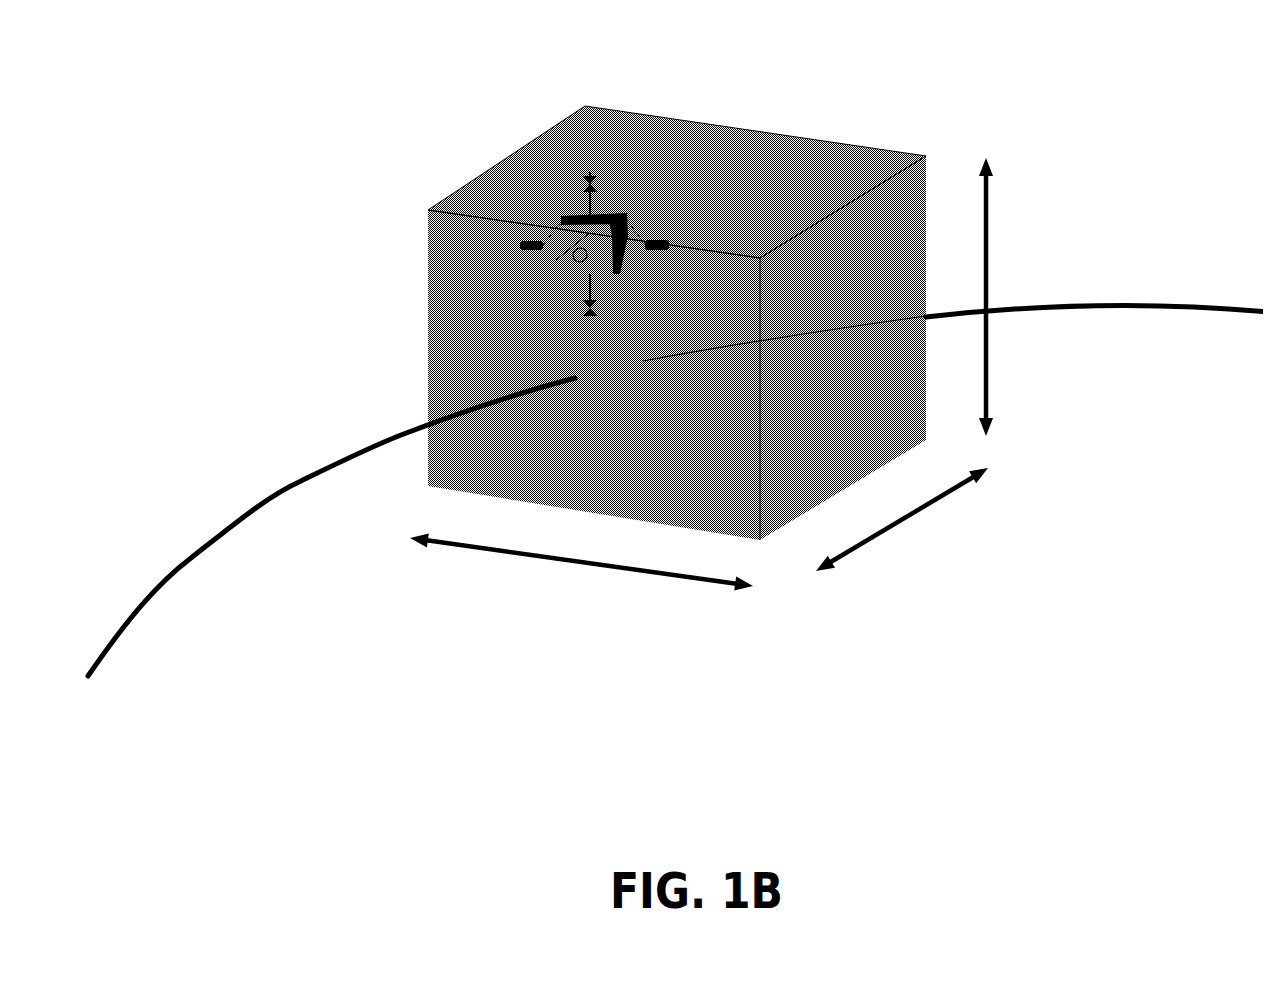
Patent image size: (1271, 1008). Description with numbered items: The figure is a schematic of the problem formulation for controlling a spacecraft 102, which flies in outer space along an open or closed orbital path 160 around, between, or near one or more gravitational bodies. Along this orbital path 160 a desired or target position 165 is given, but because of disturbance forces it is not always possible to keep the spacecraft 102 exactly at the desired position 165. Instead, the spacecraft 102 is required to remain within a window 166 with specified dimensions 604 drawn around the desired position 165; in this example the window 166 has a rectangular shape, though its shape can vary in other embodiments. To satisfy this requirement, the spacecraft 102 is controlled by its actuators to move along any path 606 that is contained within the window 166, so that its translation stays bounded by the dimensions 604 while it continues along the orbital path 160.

The spacecraft 102 is at (557, 213).
The path 606 is at (707, 138).
The window 166 is at (862, 138).
The desired position 165 is at (635, 353).
The orbital path 160 is at (118, 618).
The dimensions 604 is at (747, 605).